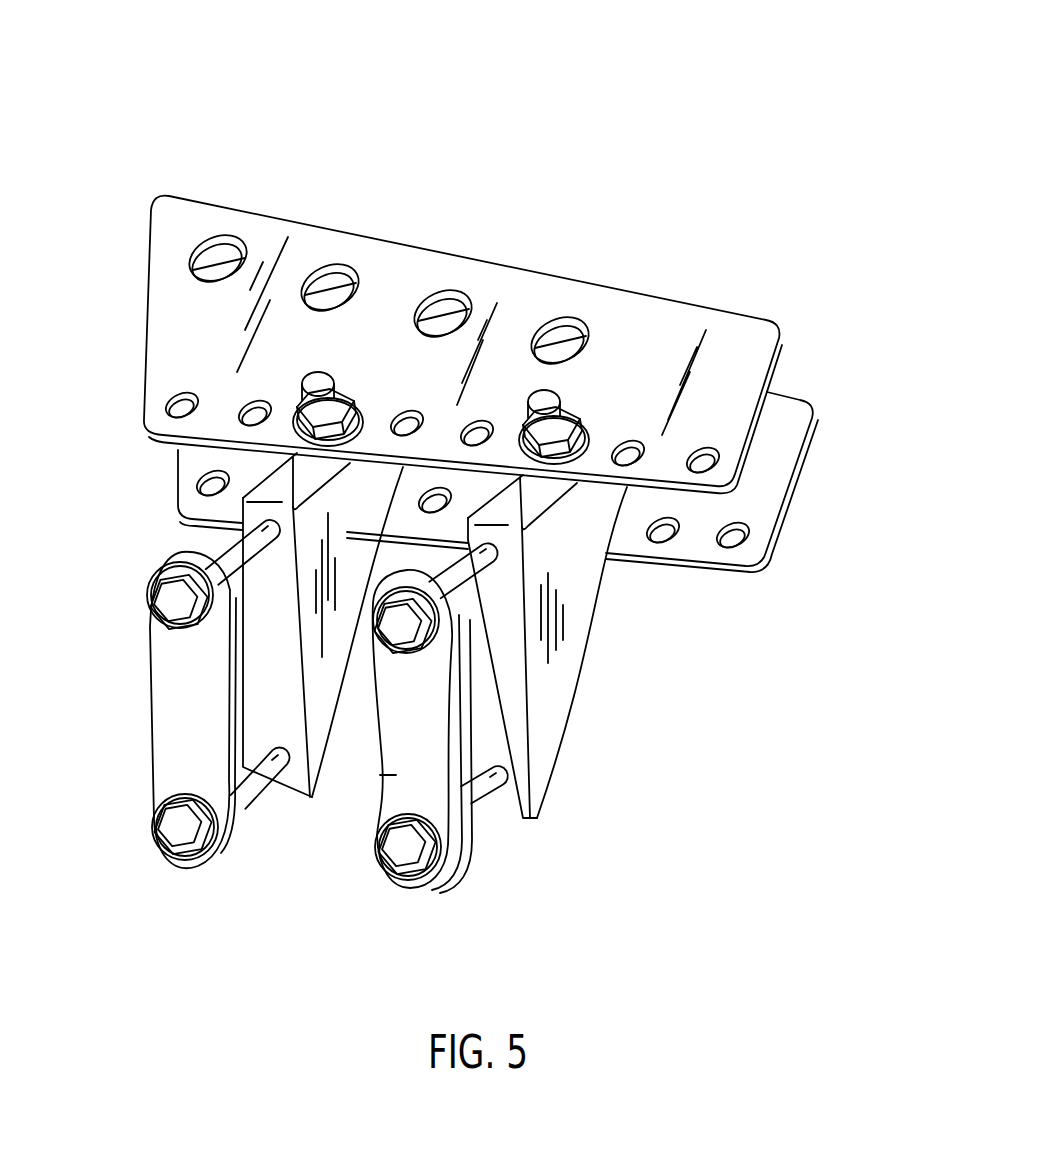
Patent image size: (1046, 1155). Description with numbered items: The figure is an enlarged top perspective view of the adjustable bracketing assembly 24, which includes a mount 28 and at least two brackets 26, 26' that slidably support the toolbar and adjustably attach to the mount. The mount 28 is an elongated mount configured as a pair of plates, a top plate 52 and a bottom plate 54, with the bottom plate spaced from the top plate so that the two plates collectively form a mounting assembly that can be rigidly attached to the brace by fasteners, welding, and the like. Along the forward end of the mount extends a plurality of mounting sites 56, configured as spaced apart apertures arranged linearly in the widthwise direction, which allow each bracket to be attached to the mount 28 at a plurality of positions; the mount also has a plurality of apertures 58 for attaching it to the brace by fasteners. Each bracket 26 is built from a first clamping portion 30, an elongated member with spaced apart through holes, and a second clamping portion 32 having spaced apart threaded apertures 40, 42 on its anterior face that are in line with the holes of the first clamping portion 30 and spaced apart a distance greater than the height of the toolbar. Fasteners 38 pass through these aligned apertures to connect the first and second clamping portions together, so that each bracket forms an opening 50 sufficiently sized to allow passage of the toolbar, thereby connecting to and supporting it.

The adjustable bracketing assembly 24 is at (673, 108).
The mount 28 is at (847, 310).
The top plate 52 is at (688, 302).
The bottom plate 54 is at (812, 442).
The mounting sites 56 is at (168, 403).
The apertures 58 is at (229, 243).
The bracket 26 is at (398, 791).
The bracket 26' is at (172, 760).
The first clamping portion 30 is at (395, 775).
The second clamping portion 32 is at (575, 658).
The fastener 38 is at (478, 818).
The aperture 40 is at (505, 775).
The aperture 42 is at (512, 550).
The opening 50 is at (482, 706).